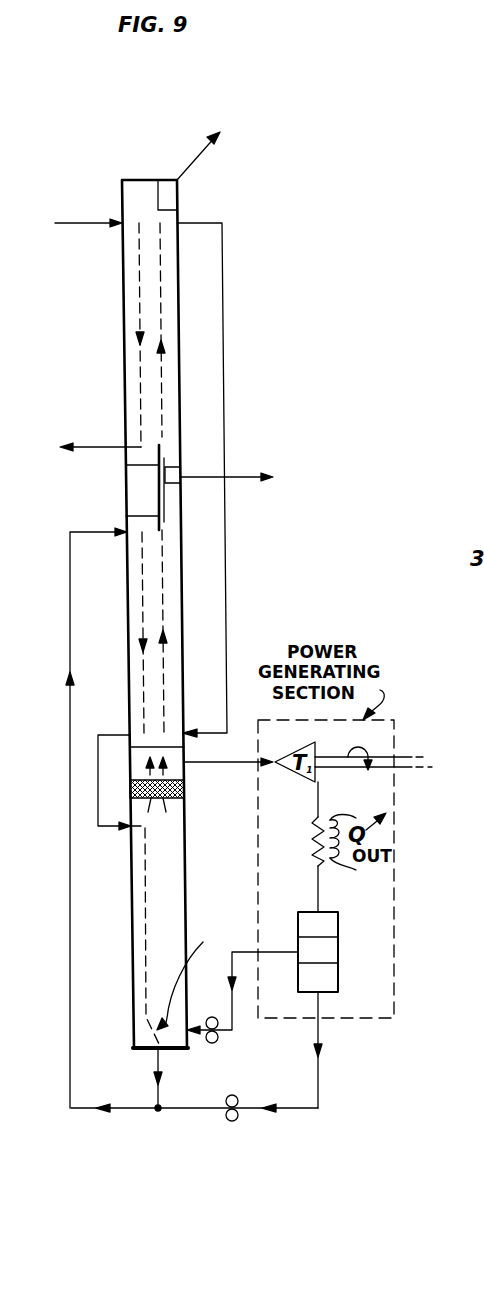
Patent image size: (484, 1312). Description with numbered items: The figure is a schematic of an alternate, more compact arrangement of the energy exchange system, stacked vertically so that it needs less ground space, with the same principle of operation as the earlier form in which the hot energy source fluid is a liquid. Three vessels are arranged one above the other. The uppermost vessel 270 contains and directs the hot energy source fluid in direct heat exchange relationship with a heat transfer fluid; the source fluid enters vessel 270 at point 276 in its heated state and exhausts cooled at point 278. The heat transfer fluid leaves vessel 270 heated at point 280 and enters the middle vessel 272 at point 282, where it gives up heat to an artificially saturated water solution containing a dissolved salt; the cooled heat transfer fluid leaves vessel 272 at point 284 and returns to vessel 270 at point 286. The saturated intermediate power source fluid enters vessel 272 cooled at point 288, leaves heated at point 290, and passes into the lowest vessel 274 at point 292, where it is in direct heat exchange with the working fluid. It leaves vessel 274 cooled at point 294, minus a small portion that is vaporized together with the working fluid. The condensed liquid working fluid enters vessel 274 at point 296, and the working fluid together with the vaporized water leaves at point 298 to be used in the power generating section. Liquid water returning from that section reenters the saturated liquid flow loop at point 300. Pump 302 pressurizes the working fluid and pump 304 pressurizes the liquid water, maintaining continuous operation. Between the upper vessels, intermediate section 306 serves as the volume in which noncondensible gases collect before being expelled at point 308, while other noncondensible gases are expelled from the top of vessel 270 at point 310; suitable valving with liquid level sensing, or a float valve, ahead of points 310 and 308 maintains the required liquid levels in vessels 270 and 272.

The vessel 270 is at (123, 330).
The vessel 272 is at (128, 595).
The vessel 274 is at (134, 945).
The entry point 276 is at (80, 225).
The exhaust point 278 is at (105, 430).
The exhaust point 280 is at (205, 223).
The entry point 282 is at (200, 730).
The exit point 284 is at (163, 502).
The entry point 286 is at (162, 437).
The entry point 288 is at (90, 532).
The exit point 290 is at (110, 733).
The entry point 292 is at (115, 828).
The exit point 294 is at (157, 1060).
The entry point 296 is at (200, 974).
The exit point 298 is at (214, 762).
The reentry point 300 is at (158, 1110).
The pump 302 is at (206, 1043).
The pump 304 is at (228, 1122).
The intermediate section 306 is at (125, 480).
The expulsion point 308 is at (240, 471).
The expulsion point 310 is at (208, 146).